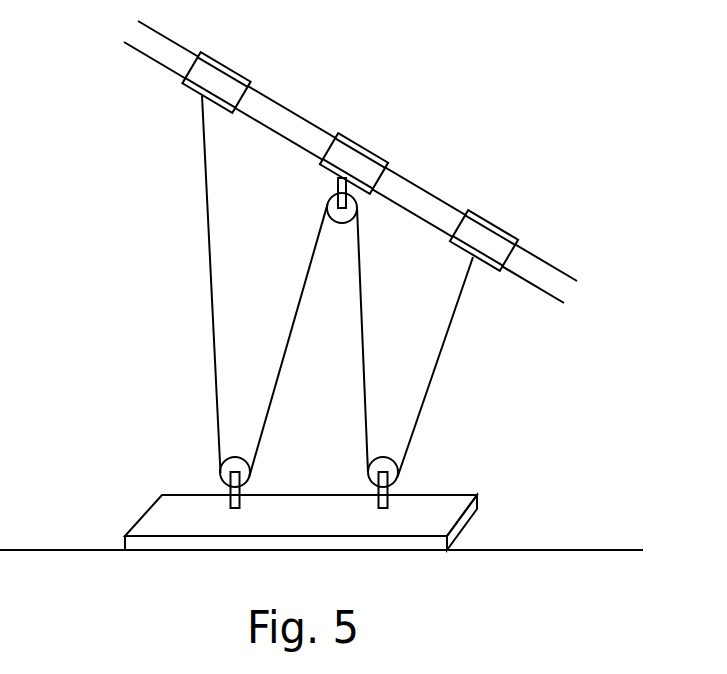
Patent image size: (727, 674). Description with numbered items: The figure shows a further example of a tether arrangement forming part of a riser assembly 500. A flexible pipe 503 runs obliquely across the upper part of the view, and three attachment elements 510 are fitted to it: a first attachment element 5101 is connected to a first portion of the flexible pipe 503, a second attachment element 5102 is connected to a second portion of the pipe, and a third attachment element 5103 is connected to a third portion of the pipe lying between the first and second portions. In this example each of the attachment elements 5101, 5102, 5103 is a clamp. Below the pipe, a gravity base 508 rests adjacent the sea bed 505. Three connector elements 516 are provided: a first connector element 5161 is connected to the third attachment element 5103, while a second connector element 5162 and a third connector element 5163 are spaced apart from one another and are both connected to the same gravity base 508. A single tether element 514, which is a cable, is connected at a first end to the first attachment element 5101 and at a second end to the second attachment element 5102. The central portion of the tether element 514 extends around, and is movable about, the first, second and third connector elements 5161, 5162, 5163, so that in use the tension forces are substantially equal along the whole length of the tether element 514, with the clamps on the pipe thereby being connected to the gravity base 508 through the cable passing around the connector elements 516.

The riser assembly 500 is at (505, 125).
The flexible pipe 503 is at (290, 110).
The sea bed 505 is at (593, 550).
The gravity base 508 is at (144, 515).
The attachment elements 510 is at (369, 139).
The first attachment element 5101 is at (224, 57).
The second attachment element 5102 is at (487, 216).
The third attachment element 5103 is at (357, 140).
The tether element 514 is at (440, 353).
The connector elements 516 is at (311, 343).
The first connector element 5161 is at (328, 199).
The second connector element 5162 is at (220, 472).
The third connector element 5163 is at (398, 468).